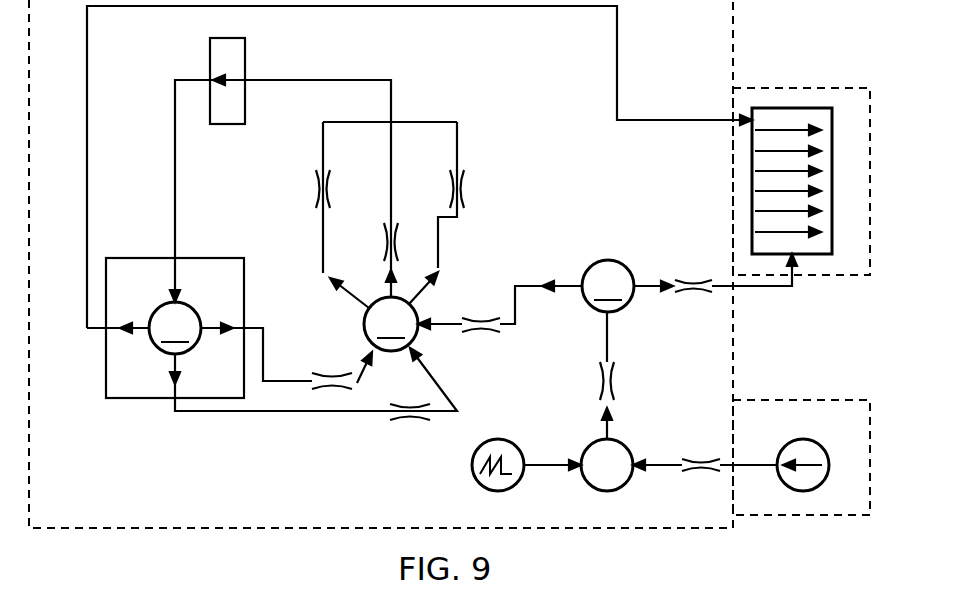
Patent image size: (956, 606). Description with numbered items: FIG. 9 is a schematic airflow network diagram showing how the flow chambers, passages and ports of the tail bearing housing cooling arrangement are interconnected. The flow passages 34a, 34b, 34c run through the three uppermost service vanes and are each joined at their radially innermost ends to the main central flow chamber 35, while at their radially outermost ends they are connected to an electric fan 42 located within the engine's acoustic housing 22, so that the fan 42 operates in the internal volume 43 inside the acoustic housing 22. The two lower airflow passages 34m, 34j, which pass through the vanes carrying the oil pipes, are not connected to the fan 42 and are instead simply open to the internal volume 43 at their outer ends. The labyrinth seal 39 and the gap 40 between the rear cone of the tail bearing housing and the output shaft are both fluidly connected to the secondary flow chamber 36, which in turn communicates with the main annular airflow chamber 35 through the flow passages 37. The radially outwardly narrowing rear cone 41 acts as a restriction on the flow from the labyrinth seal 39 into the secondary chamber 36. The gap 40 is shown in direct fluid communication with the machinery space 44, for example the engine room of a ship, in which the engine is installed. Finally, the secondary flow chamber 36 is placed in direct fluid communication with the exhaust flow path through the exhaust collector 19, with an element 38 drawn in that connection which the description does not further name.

The exhaust collector 19 is at (818, 108).
The acoustic housing 22 is at (82, 528).
The flow passage 34a is at (316, 215).
The flow passage 34b is at (365, 242).
The flow passage 34c is at (431, 213).
The airflow passage 34j is at (406, 384).
The airflow passage 34m is at (333, 367).
The main central flow chamber 35 is at (391, 324).
The secondary flow chamber 36 is at (608, 286).
The flow passages 37 is at (500, 306).
The valve 38 is at (715, 269).
The labyrinth seal 39 is at (475, 470).
The gap 40 is at (705, 449).
The rear cone 41 is at (628, 375).
The electric fan 42 is at (240, 58).
The internal volume 43 is at (281, 334).
The machinery space 44 is at (840, 398).